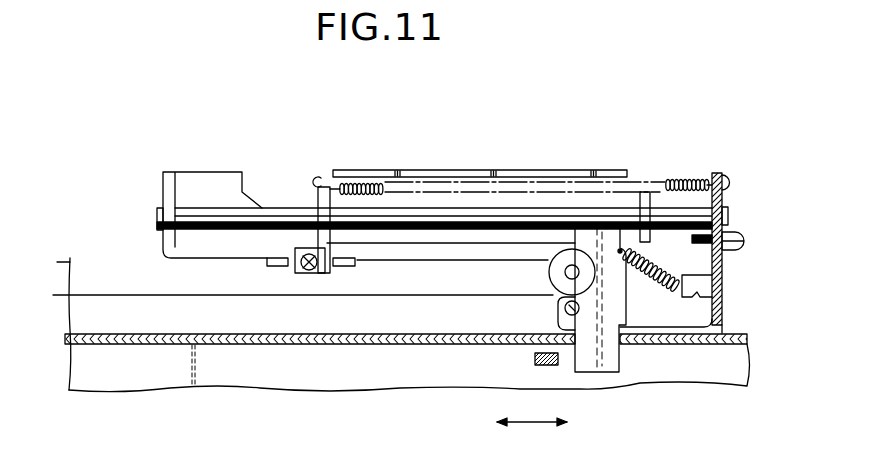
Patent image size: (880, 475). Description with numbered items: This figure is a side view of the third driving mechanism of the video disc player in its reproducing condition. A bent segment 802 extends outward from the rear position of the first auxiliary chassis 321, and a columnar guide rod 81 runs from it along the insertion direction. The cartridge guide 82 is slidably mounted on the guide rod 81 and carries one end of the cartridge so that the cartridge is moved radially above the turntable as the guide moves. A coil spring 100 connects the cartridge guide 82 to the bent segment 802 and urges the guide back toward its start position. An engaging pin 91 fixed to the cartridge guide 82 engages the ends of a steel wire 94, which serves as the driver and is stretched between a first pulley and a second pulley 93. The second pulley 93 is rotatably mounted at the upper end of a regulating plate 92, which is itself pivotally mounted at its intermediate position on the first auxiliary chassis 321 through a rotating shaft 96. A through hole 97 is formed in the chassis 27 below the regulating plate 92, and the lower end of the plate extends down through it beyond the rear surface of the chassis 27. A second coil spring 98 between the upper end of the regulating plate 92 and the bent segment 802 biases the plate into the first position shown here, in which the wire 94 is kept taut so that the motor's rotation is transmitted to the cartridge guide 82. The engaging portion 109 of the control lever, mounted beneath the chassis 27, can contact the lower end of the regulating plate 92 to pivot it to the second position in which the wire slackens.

The columnar guide rod 81 is at (267, 206).
The coil spring 100 is at (408, 192).
The cartridge guide 82 is at (488, 170).
The regulating plate 92 is at (612, 223).
The second pulley 93 is at (548, 273).
The rotating shaft 96 is at (565, 310).
The steel wire 94 is at (396, 294).
The engaging pin 91 is at (307, 273).
The coil spring 98 is at (645, 282).
The bent segment 802 is at (724, 281).
The first auxiliary chassis 321 is at (155, 334).
The through hole 97 is at (635, 344).
The chassis 27 is at (232, 345).
The engaging portion 109 is at (552, 365).